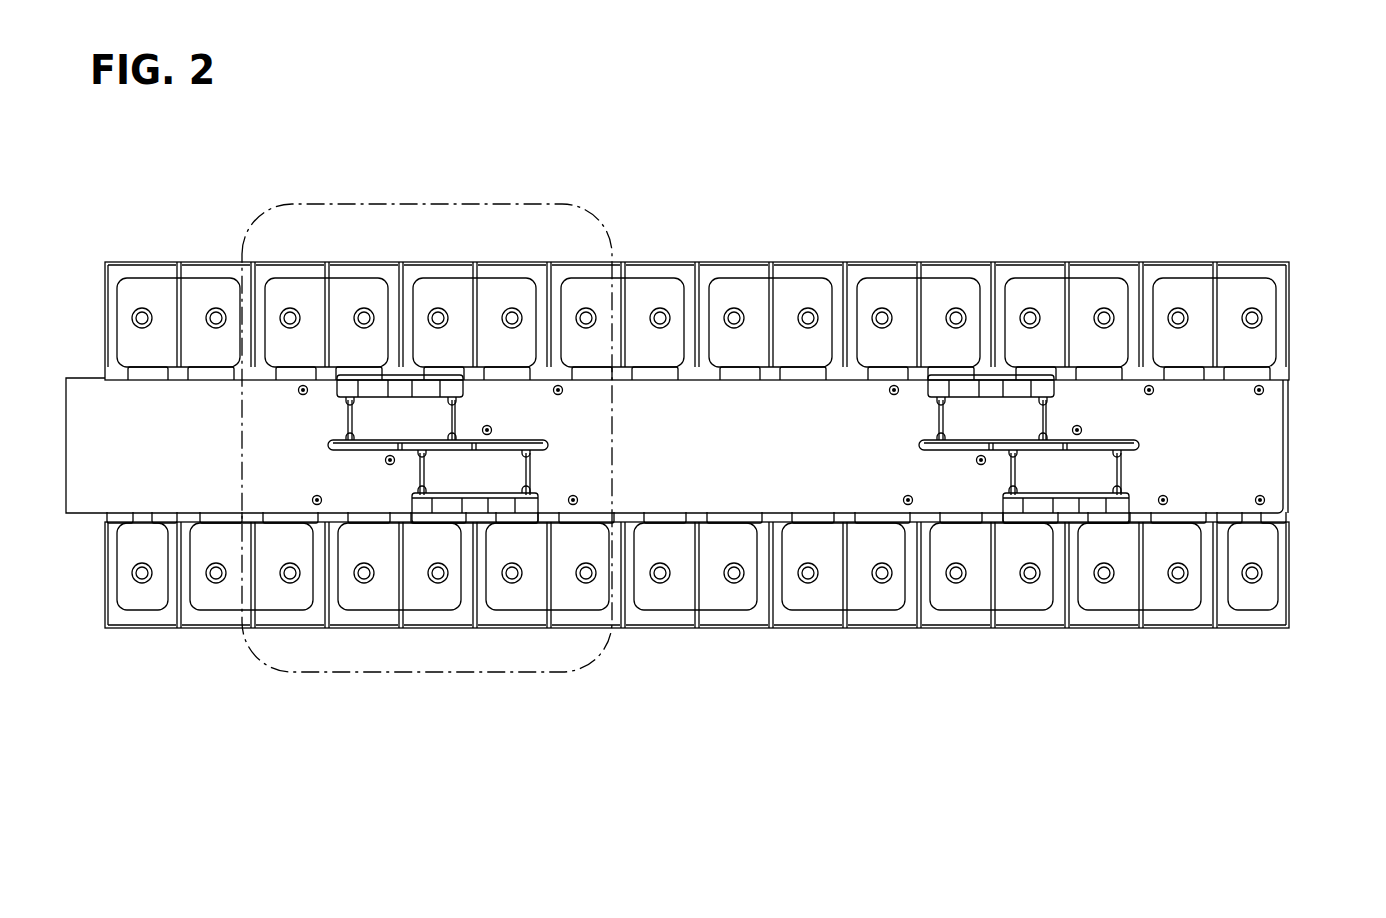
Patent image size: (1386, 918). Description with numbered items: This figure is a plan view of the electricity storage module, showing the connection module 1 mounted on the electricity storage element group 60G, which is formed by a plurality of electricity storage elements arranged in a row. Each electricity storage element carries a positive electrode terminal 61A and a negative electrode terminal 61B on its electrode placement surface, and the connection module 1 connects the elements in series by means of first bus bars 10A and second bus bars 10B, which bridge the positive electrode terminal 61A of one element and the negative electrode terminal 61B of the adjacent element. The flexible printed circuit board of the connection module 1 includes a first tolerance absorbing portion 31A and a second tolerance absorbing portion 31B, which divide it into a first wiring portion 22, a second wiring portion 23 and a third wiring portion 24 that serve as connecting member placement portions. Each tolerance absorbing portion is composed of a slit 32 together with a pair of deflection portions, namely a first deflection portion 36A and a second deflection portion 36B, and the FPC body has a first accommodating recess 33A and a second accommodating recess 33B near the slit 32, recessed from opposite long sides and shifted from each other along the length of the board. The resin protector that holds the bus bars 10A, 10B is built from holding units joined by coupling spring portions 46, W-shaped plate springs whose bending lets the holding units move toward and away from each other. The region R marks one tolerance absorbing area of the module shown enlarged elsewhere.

The connection module 1 is at (1375, 357).
The first bus bar 10A is at (1218, 300).
The second bus bar 10B is at (135, 600).
The first wiring portion 22 is at (185, 465).
The second wiring portion 23 is at (805, 480).
The third wiring portion 24 is at (1215, 465).
The first tolerance absorbing portion 31A is at (490, 406).
The second tolerance absorbing portion 31B is at (912, 417).
The slit 32 is at (546, 450).
The first accommodating recess 33A is at (351, 393).
The second accommodating recess 33B is at (423, 512).
The first deflection portion 36A is at (372, 415).
The second deflection portion 36B is at (463, 467).
The coupling spring portion 46 is at (430, 388).
The electricity storage element group 60G is at (1294, 336).
The positive electrode terminal 61A is at (1176, 308).
The negative electrode terminal 61B is at (1252, 308).
The region R is at (293, 672).